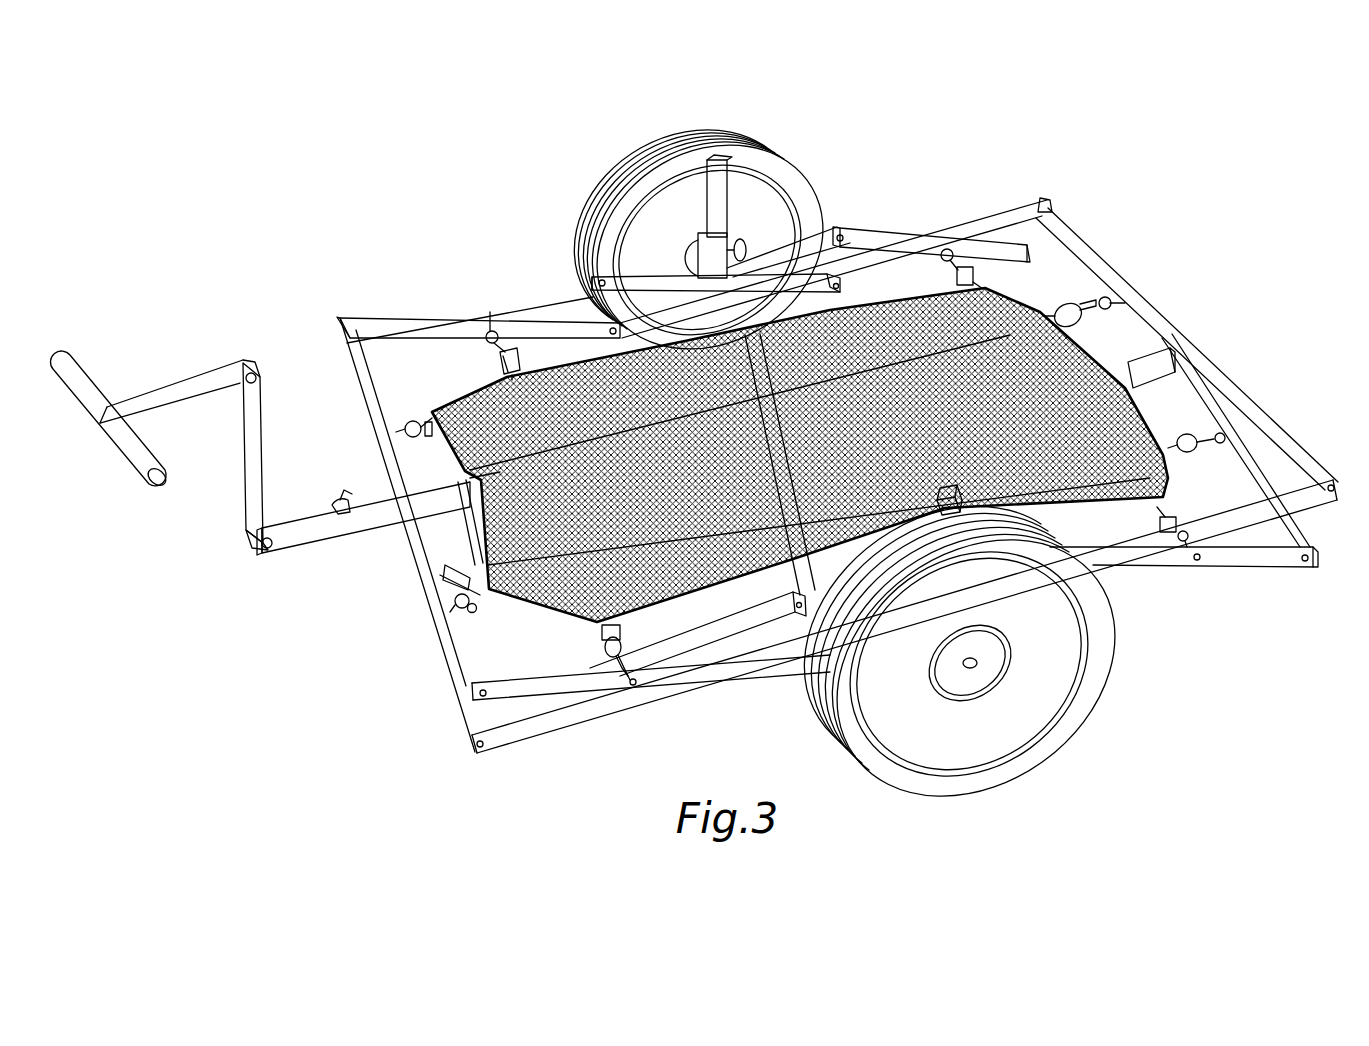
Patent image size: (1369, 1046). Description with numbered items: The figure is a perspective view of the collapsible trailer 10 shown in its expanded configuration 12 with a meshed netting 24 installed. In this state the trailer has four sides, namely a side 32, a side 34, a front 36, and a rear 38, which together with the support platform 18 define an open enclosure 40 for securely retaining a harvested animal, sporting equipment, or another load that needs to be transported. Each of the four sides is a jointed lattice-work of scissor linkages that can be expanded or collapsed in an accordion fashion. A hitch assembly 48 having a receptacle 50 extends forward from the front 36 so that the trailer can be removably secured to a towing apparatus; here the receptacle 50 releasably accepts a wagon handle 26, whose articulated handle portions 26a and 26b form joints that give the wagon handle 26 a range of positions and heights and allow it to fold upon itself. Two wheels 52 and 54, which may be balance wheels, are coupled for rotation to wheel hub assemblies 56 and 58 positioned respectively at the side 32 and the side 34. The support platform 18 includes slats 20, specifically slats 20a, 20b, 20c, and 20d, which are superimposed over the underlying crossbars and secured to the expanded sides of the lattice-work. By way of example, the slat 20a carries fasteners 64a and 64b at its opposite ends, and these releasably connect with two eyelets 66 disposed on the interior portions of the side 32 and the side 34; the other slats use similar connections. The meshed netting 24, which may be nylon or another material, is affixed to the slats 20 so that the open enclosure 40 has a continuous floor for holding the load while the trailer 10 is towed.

The collapsible trailer 10 is at (1156, 222).
The expanded configuration 12 is at (839, 428).
The support platform 18 is at (560, 367).
The slats 20 is at (593, 620).
The slat 20a is at (622, 626).
The slat 20b is at (1175, 515).
The slat 20c is at (427, 404).
The slat 20d is at (985, 280).
The meshed netting 24 is at (1020, 298).
The wagon handle 26 is at (170, 458).
The articulated handle portion 26a is at (248, 357).
The articulated handle portion 26b is at (258, 556).
The side 32 is at (370, 314).
The side 34 is at (688, 684).
The front 36 is at (407, 565).
The rear 38 is at (1212, 380).
The open enclosure 40 is at (882, 247).
The hitch assembly 48 is at (342, 548).
The receptacle 50 is at (338, 505).
The wheel 52 is at (696, 240).
The wheel 54 is at (978, 667).
The wheel hub assembly 56 is at (754, 227).
The wheel hub assembly 58 is at (956, 519).
The fastener 64a is at (627, 657).
The fastener 64b is at (504, 367).
The eyelets 66 is at (488, 328).